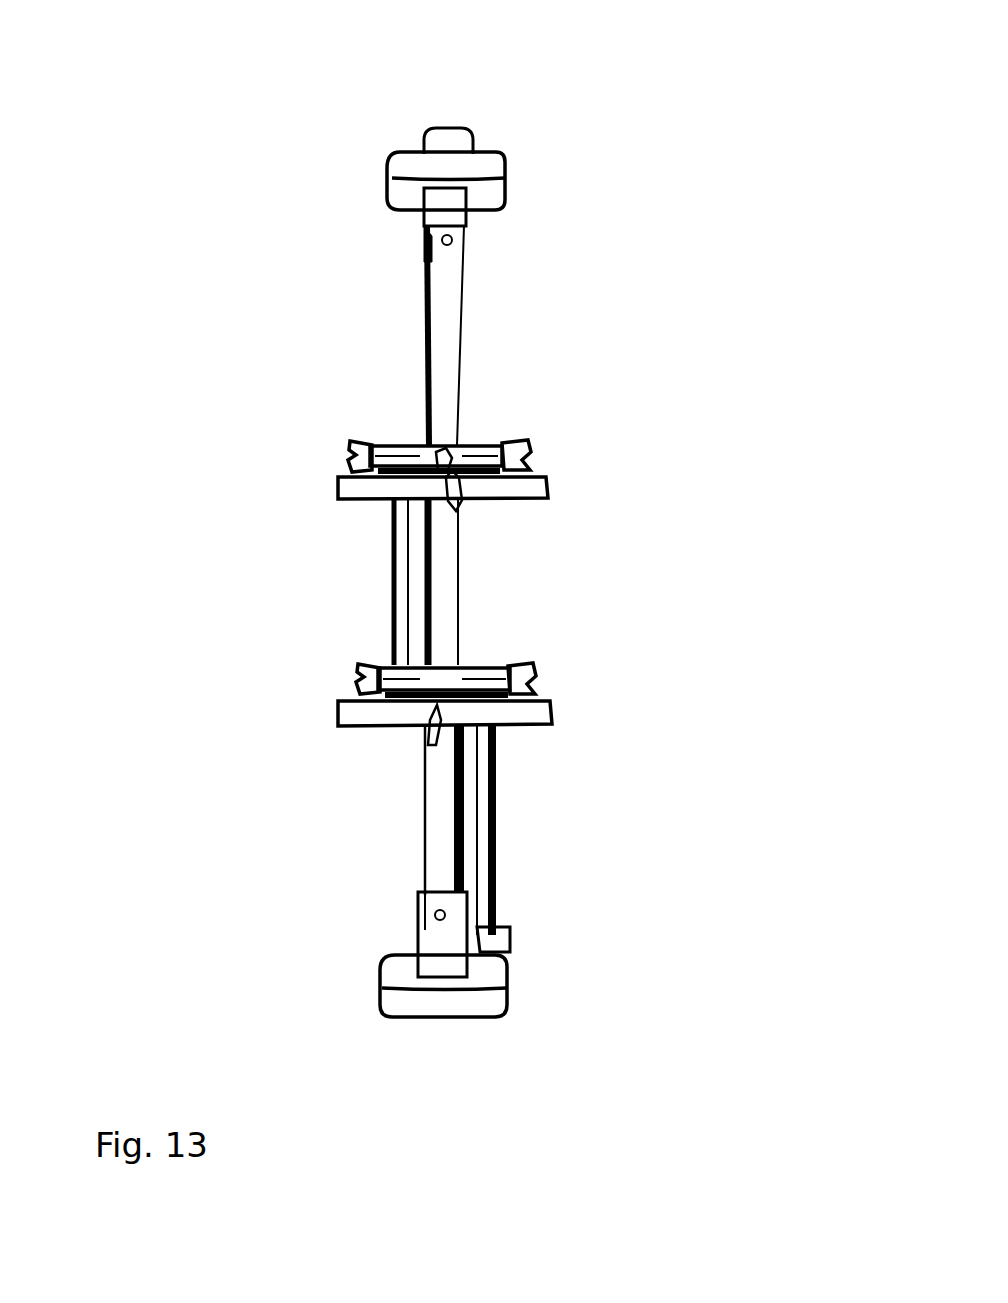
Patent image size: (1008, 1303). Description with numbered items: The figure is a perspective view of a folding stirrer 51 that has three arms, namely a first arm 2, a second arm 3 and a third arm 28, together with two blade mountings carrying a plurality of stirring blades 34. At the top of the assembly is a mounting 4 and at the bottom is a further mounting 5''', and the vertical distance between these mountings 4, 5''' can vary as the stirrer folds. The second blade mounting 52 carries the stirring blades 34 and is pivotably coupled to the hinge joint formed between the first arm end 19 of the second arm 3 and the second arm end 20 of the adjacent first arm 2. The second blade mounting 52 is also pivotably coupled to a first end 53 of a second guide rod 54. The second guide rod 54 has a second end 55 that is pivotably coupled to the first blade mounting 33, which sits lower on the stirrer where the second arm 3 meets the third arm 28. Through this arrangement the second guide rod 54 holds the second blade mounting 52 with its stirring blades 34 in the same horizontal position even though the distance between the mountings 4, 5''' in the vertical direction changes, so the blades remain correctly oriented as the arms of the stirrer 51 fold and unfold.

The stirrer 51 is at (188, 163).
The mounting 4 is at (480, 165).
The first arm 2 is at (447, 350).
The stirring blades 34 is at (530, 448).
The second blade mounting 52 is at (525, 455).
The second arm end 20 is at (440, 442).
The first arm end 19 is at (442, 507).
The first end 53 is at (400, 498).
The second guide rod 54 is at (402, 582).
The second arm 3 is at (447, 593).
The second end 55 is at (292, 691).
The first blade mounting 33 is at (530, 690).
The third arm 28 is at (440, 835).
The mounting 5''' is at (535, 1045).